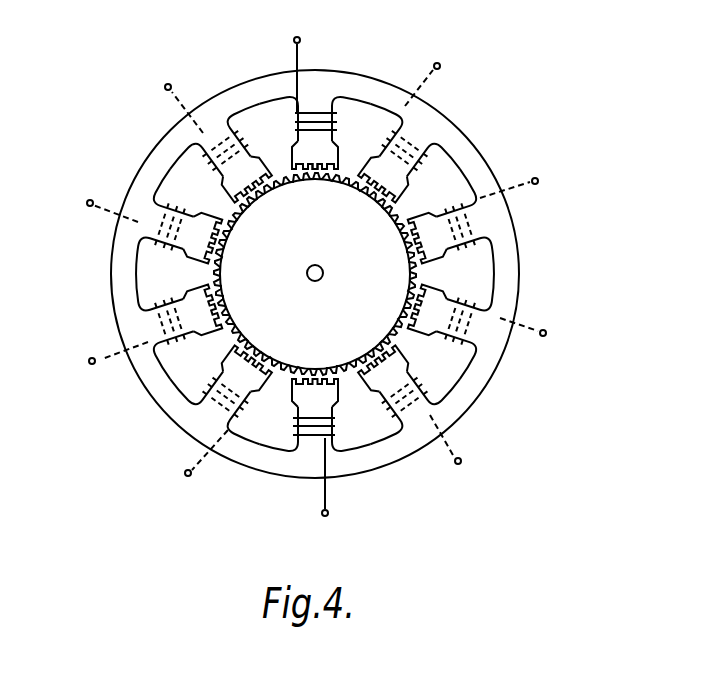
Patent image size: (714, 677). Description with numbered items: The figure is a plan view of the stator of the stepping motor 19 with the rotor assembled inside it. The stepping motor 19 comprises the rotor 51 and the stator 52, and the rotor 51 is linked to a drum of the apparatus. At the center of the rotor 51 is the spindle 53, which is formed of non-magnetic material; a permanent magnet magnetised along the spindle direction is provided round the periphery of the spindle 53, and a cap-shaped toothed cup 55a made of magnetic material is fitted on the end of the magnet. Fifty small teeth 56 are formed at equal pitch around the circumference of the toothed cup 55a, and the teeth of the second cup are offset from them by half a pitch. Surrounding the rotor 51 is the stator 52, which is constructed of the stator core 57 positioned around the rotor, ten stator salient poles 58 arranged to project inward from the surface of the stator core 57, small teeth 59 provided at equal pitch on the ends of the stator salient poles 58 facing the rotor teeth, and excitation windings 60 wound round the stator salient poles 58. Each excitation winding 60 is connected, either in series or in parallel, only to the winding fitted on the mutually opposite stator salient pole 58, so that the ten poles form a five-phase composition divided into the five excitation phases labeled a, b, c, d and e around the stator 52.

The stepping motor 19 is at (564, 237).
The rotor 51 is at (290, 353).
The stator 52 is at (145, 155).
The spindle 53 is at (322, 268).
The toothed cup 55a is at (245, 323).
The small teeth 56 is at (288, 175).
The stator core 57 is at (477, 160).
The stator salient pole 58 is at (440, 263).
The small teeth 59 is at (340, 160).
The excitation winding 60 is at (315, 100).